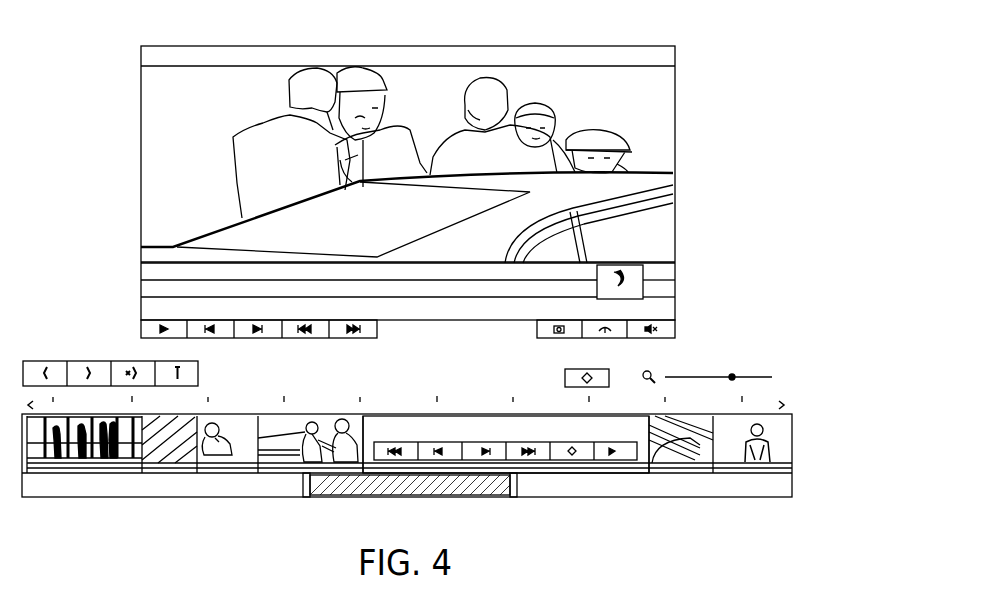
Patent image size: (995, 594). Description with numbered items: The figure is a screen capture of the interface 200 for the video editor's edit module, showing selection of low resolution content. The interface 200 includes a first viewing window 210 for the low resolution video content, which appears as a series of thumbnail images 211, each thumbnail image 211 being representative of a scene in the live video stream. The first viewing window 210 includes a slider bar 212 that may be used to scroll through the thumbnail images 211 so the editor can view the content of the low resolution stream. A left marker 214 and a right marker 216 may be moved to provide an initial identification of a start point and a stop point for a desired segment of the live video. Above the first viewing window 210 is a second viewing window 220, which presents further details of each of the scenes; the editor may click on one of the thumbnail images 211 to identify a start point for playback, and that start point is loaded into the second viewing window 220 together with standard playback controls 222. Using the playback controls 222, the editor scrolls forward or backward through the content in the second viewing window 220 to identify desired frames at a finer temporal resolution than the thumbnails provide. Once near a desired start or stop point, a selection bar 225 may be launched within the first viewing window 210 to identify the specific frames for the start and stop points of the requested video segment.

The interface 200 is at (753, 57).
The second viewing window 220 is at (690, 190).
The playback controls 222 is at (128, 330).
The first viewing window 210 is at (798, 450).
The thumbnail images 211 is at (157, 473).
The slider bar 212 is at (427, 487).
The left marker 214 is at (305, 497).
The right marker 216 is at (513, 497).
The selection bar 225 is at (507, 422).